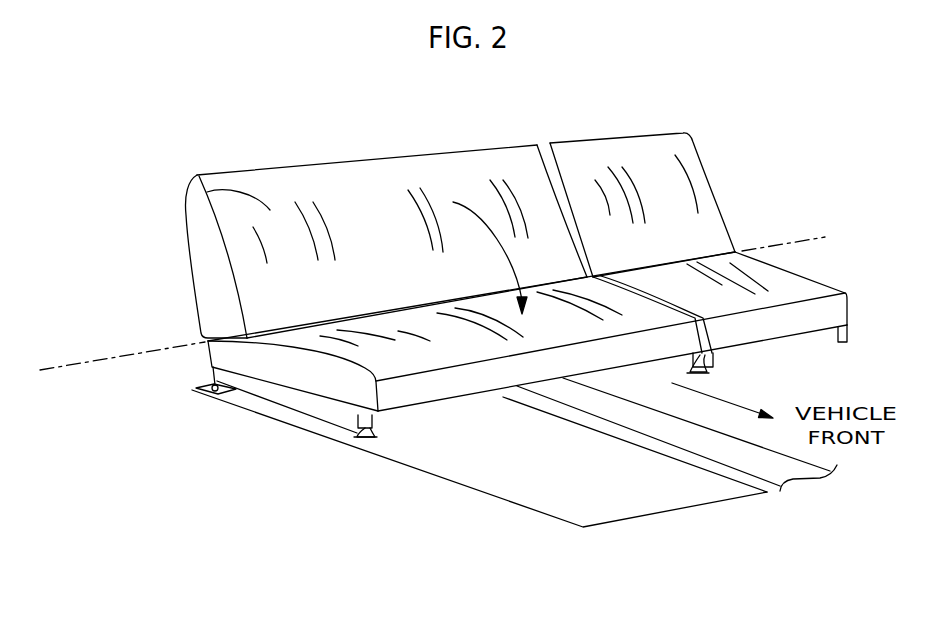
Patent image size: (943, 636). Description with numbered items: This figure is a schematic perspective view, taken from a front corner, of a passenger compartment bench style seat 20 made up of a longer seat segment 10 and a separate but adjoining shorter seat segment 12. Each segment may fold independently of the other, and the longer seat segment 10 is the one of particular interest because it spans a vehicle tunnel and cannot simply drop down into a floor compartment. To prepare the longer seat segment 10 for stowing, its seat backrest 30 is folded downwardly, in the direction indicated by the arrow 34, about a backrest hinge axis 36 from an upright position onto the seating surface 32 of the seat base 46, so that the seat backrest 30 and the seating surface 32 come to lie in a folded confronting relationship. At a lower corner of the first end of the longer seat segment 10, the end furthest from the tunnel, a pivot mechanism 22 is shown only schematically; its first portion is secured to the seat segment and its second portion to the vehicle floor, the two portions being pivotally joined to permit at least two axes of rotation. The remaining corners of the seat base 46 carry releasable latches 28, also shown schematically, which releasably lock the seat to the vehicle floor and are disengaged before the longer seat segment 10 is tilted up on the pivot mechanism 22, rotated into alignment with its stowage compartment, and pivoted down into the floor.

The longer seat segment 10 is at (386, 241).
The shorter seat segment 12 is at (642, 205).
The bench style seat 20 is at (288, 87).
The pivot mechanism 22 is at (212, 390).
The releasable latches 28 is at (357, 437).
The seat backrest 30 is at (200, 194).
The seating surface 32 is at (400, 332).
The downward folding direction 34 is at (472, 203).
The backrest hinge axis 36 is at (105, 355).
The seat base 46 is at (473, 380).